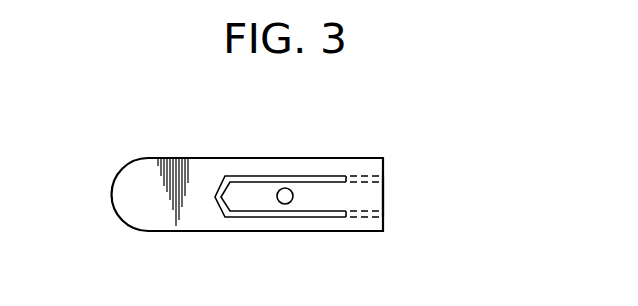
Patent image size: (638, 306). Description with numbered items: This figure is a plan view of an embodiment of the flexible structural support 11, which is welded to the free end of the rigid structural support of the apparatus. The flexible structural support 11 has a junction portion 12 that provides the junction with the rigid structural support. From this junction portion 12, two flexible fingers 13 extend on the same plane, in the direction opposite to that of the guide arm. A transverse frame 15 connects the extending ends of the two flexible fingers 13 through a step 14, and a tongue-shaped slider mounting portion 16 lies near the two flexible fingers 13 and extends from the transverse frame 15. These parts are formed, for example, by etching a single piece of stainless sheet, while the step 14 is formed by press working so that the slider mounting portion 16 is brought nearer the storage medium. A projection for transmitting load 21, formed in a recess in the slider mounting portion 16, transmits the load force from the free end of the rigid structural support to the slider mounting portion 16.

The flexible structural support 11 is at (140, 158).
The junction portion 12 is at (152, 222).
The flexible fingers 13 is at (307, 158).
The step 14 is at (383, 177).
The transverse frame 15 is at (370, 198).
The slider mounting portion 16 is at (248, 208).
The projection for transmitting load 21 is at (285, 205).